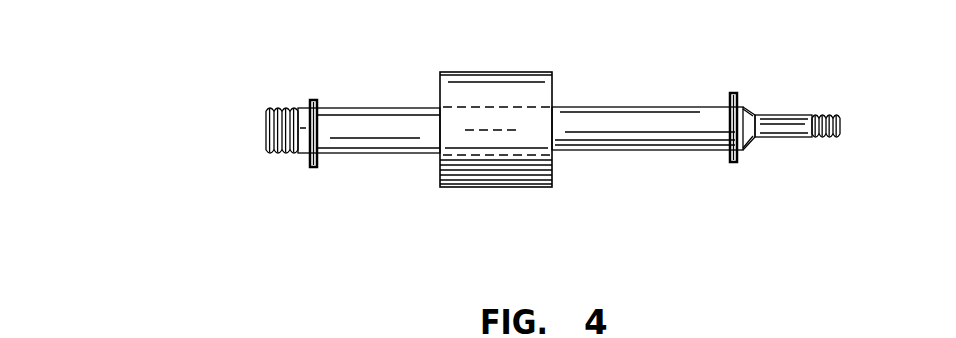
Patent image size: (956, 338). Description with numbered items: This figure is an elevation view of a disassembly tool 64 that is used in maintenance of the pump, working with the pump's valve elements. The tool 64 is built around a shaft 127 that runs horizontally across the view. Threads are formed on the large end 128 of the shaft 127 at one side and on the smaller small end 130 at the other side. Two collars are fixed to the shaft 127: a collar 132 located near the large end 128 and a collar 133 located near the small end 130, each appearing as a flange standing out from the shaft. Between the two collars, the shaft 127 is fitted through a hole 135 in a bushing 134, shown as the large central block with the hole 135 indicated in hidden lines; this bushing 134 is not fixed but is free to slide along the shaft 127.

The disassembly tool 64 is at (641, 172).
The shaft 127 is at (655, 115).
The large end 128 is at (274, 108).
The small end 130 is at (822, 115).
The collar 132 is at (316, 100).
The collar 133 is at (738, 103).
The bushing 134 is at (490, 72).
The hole 135 is at (533, 105).